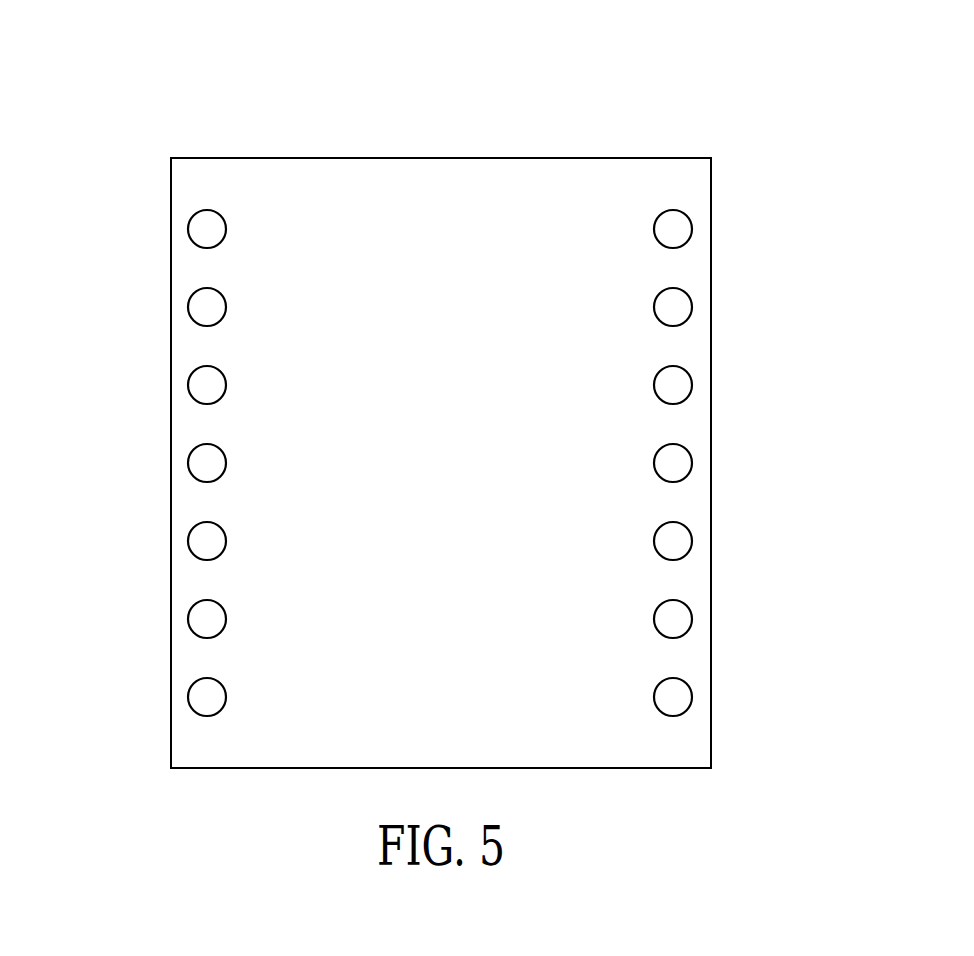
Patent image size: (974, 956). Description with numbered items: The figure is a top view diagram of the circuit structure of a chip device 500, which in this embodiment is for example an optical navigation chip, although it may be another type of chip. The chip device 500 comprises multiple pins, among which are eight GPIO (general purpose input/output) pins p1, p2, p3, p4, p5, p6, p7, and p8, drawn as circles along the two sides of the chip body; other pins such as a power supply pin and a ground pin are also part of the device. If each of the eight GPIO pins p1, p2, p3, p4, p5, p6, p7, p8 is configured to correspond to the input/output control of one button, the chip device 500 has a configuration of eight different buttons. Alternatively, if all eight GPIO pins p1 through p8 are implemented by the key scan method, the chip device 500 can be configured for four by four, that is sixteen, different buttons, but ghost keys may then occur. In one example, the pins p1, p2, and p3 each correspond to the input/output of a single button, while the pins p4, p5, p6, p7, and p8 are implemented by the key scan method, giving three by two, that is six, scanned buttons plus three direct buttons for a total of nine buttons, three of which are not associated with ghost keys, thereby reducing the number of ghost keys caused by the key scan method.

The chip device 500 is at (528, 398).
The GPIO pin p1 is at (710, 463).
The GPIO pin p2 is at (711, 541).
The GPIO pin p3 is at (711, 619).
The GPIO pin p4 is at (711, 697).
The GPIO pin p5 is at (169, 463).
The GPIO pin p6 is at (169, 541).
The GPIO pin p7 is at (169, 619).
The GPIO pin p8 is at (169, 697).